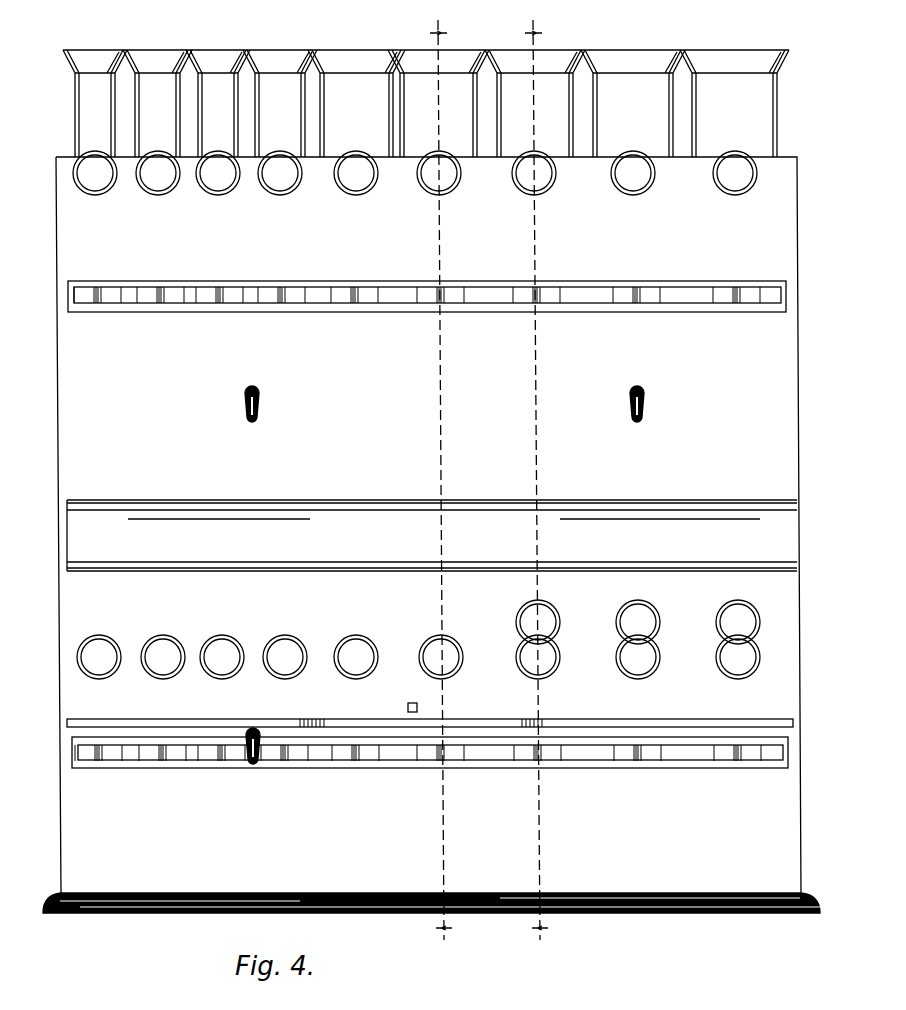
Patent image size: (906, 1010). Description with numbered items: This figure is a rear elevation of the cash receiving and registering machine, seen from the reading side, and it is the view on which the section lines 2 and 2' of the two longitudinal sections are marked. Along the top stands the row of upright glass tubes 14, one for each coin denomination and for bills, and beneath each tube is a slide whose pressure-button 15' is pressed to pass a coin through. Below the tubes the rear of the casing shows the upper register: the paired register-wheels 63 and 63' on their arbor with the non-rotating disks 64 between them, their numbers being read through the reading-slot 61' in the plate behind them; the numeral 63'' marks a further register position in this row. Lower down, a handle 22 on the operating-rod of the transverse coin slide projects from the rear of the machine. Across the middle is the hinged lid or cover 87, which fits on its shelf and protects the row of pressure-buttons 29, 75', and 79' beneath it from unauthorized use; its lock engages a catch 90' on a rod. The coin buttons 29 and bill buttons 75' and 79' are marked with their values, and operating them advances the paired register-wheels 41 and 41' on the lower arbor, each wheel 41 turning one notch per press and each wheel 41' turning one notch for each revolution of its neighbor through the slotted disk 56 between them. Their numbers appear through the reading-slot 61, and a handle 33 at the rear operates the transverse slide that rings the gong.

The tubes 14 is at (274, 54).
The pressure-button 15' is at (415, 180).
The reading-slot 61' is at (427, 306).
The register window 63'' is at (185, 311).
The disk 64 is at (217, 303).
The register-wheel 63 is at (464, 316).
The register-wheel 63' is at (605, 316).
The handle 22 is at (259, 405).
The lid or cover 87 is at (432, 535).
The pressure-button 29 is at (276, 679).
The pressure-button 75' is at (638, 657).
The pressure-button 79' is at (638, 622).
The catch 90' is at (430, 710).
The reading-slot 61 is at (430, 761).
The register-wheel 41' is at (369, 773).
The disk 56 is at (165, 760).
The register-wheel 41 is at (439, 771).
The handle 33 is at (259, 766).
The section line 2 is at (536, 481).
The section line 2' is at (442, 481).